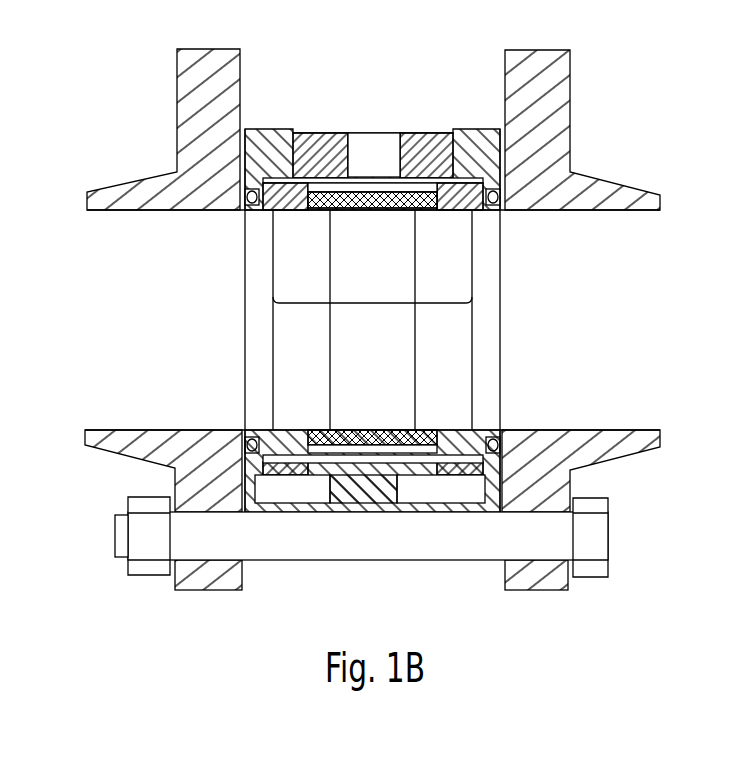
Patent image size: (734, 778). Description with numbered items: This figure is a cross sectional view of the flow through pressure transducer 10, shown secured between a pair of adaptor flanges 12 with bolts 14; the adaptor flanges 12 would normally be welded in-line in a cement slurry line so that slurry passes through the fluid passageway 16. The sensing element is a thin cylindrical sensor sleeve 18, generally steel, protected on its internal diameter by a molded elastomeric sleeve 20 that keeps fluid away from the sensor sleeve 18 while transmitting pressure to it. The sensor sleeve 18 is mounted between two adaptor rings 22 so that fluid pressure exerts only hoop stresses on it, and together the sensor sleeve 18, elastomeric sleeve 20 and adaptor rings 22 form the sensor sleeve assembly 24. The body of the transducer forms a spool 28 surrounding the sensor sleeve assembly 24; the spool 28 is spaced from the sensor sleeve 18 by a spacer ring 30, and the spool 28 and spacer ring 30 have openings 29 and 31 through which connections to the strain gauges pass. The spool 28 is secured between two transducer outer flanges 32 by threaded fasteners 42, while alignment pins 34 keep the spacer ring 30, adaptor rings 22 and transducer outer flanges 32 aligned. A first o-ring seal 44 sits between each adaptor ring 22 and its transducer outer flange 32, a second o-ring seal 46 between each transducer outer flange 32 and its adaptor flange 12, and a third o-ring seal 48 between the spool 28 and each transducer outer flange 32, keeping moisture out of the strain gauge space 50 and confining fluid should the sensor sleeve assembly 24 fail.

The flow through pressure transducer 10 is at (438, 83).
The adaptor flange 12 is at (182, 185).
The bolt 14 is at (415, 538).
The fluid passageway 16 is at (377, 272).
The sensor sleeve 18 is at (375, 450).
The elastomeric sleeve 20 is at (377, 430).
The adaptor ring 22 is at (307, 430).
The sensor sleeve assembly 24 is at (370, 307).
The spool 28 is at (362, 490).
The opening 29 is at (378, 135).
The spacer ring 30 is at (332, 135).
The opening 31 is at (374, 156).
The transducer outer flange 32 is at (175, 488).
The alignment pin 34 is at (322, 133).
The threaded fastener 42 is at (208, 513).
The first o-ring seal 44 is at (285, 432).
The second o-ring seal 46 is at (244, 440).
The third o-ring seal 48 is at (256, 498).
The strain gauge space 50 is at (348, 452).